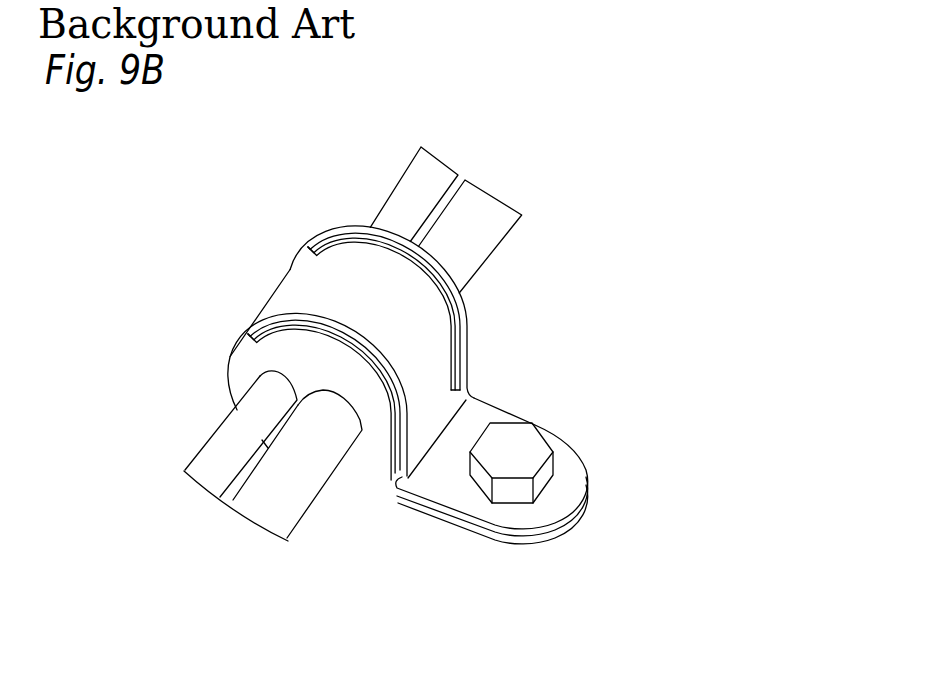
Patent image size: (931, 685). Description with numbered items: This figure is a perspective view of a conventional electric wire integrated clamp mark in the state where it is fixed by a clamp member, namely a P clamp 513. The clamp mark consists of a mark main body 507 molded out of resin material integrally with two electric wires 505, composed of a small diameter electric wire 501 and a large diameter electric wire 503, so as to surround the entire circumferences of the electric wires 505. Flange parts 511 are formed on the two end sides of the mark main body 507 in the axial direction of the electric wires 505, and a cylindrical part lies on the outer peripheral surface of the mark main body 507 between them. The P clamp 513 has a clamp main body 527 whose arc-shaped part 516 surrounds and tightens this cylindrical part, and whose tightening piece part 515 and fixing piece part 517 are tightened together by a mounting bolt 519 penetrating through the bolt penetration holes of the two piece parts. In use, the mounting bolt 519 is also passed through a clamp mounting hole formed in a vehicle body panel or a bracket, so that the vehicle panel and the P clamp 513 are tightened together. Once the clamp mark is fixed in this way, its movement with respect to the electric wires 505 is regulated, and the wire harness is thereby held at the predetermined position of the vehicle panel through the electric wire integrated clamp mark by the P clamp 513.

The small diameter electric wire 501 is at (430, 170).
The large diameter electric wire 503 is at (490, 203).
The electric wires 505 is at (552, 102).
The mark main body 507 is at (248, 369).
The flange parts 511 is at (357, 229).
The P clamp 513 is at (271, 288).
The tightening piece part 515 is at (568, 462).
The arc-shaped part 516 is at (327, 287).
The fixing piece part 517 is at (486, 544).
The mounting bolt 519 is at (530, 438).
The clamp main body 527 is at (448, 523).